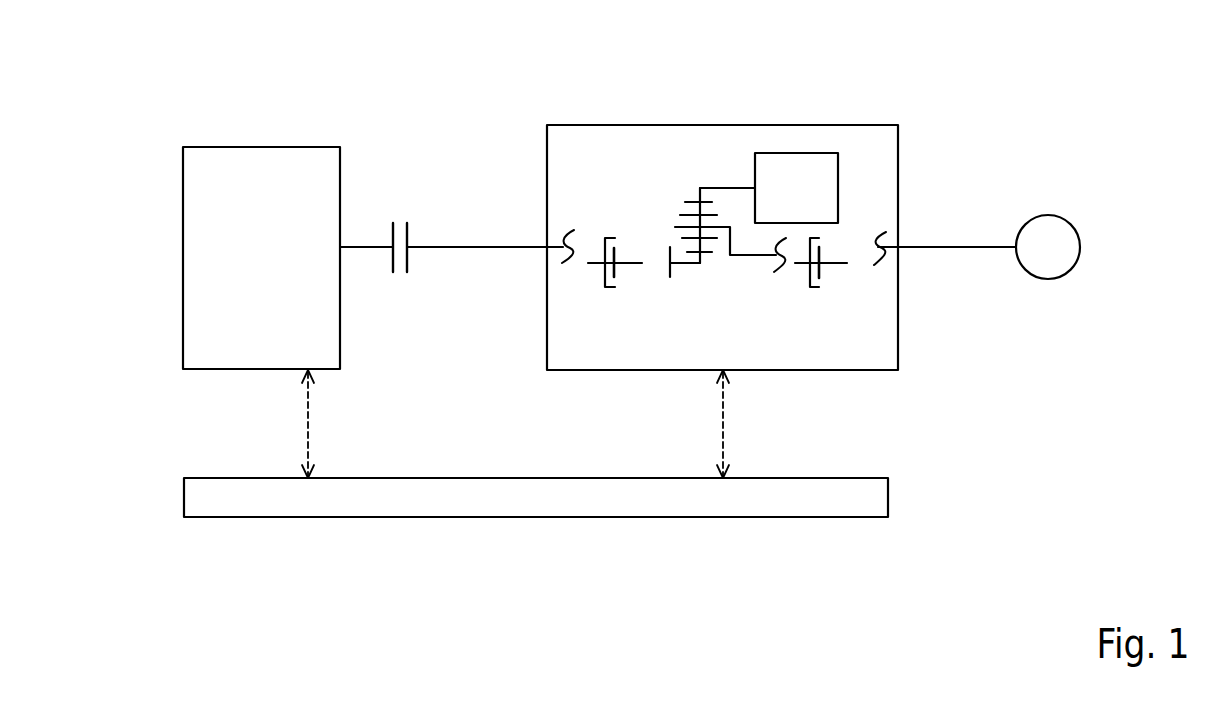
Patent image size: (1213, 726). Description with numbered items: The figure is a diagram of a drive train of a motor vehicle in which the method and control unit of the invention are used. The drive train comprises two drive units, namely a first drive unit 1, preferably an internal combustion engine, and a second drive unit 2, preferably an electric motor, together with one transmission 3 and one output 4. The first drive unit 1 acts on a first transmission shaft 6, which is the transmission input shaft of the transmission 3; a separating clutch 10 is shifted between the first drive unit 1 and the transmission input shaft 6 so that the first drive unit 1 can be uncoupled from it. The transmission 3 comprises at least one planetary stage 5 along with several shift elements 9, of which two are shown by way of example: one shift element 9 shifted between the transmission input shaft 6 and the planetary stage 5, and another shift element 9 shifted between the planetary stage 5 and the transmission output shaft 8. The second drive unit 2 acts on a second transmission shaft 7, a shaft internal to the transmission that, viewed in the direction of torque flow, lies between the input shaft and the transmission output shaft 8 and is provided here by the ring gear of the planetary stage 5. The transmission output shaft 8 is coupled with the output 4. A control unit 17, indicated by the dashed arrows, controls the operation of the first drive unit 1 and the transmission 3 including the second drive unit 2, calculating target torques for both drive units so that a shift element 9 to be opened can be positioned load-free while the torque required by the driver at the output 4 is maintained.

The first drive unit 1 is at (285, 182).
The separating clutch 10 is at (395, 210).
The first transmission shaft 6 is at (495, 245).
The transmission 3 is at (628, 125).
The shift element 9 is at (608, 300).
The planetary stage 5 is at (698, 178).
The second transmission shaft 7 is at (733, 185).
The second drive unit 2 is at (820, 173).
The transmission output shaft 8 is at (953, 245).
The output 4 is at (1048, 230).
The control unit 17 is at (675, 500).